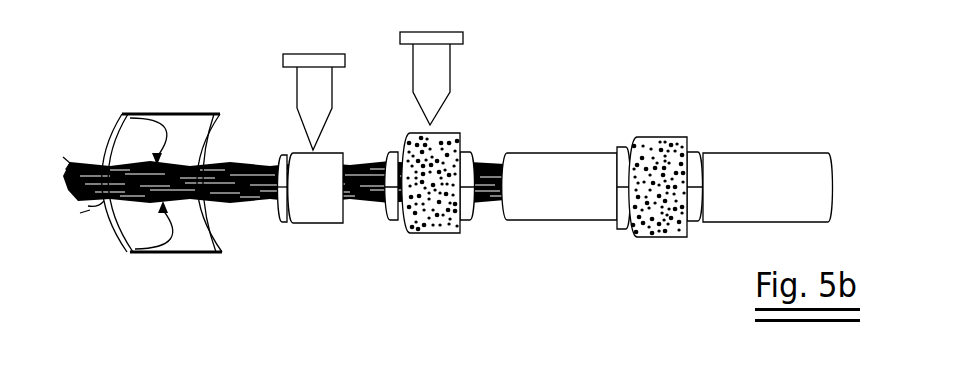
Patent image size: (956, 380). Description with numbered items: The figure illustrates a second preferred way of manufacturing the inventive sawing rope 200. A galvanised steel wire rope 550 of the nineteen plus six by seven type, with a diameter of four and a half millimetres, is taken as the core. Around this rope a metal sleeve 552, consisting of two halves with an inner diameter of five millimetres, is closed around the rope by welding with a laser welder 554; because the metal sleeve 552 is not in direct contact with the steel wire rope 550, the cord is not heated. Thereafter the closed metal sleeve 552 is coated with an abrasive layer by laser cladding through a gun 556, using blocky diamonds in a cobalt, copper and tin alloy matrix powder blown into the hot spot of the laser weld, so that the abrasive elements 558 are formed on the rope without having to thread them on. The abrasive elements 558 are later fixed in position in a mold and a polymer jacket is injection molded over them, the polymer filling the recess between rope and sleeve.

The sawing rope 200 is at (740, 152).
The steel wire rope 550 is at (112, 208).
The metal sleeve 552 is at (315, 210).
The laser welder 554 is at (310, 79).
The gun 556 is at (438, 61).
The abrasive elements 558 is at (433, 233).